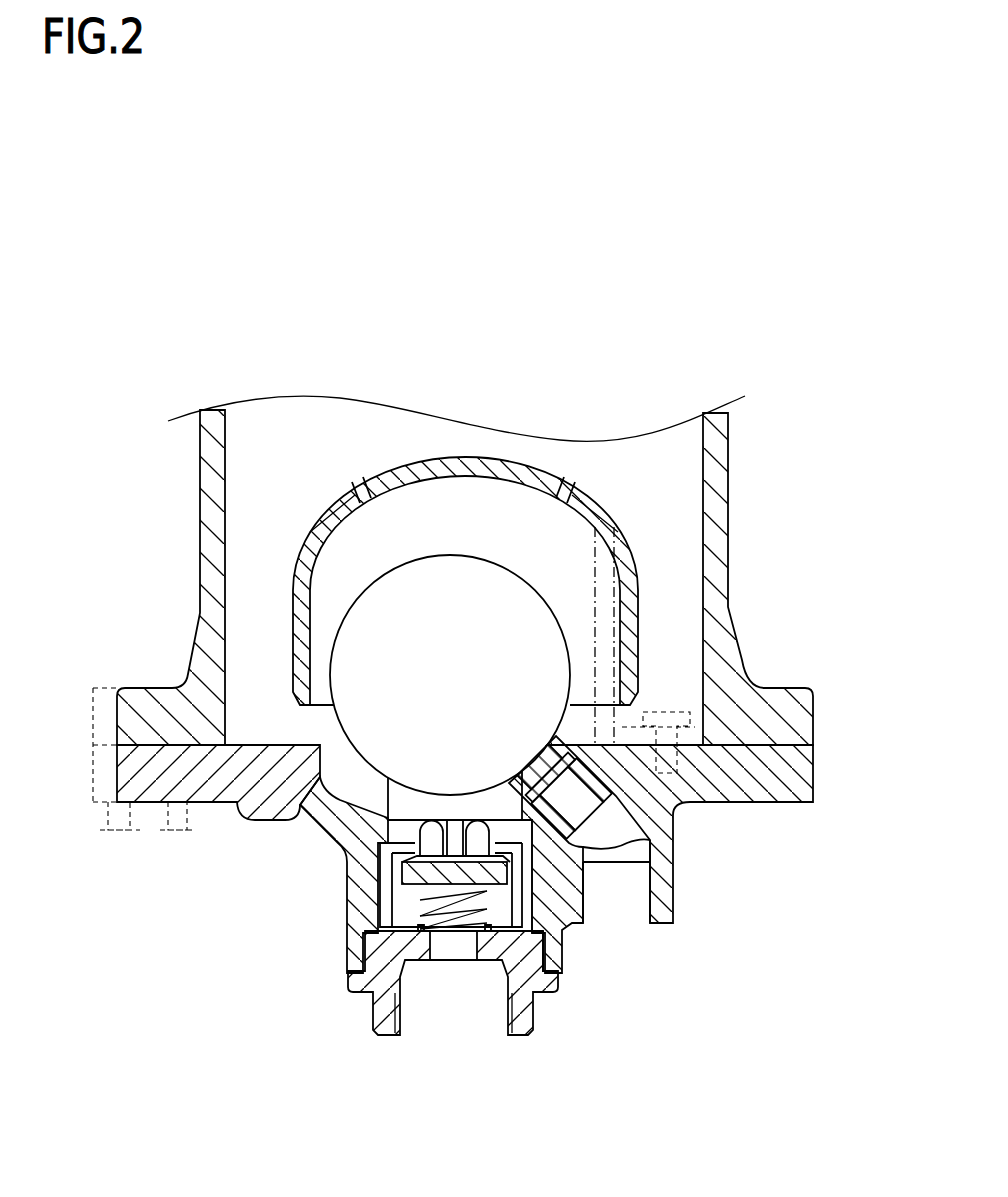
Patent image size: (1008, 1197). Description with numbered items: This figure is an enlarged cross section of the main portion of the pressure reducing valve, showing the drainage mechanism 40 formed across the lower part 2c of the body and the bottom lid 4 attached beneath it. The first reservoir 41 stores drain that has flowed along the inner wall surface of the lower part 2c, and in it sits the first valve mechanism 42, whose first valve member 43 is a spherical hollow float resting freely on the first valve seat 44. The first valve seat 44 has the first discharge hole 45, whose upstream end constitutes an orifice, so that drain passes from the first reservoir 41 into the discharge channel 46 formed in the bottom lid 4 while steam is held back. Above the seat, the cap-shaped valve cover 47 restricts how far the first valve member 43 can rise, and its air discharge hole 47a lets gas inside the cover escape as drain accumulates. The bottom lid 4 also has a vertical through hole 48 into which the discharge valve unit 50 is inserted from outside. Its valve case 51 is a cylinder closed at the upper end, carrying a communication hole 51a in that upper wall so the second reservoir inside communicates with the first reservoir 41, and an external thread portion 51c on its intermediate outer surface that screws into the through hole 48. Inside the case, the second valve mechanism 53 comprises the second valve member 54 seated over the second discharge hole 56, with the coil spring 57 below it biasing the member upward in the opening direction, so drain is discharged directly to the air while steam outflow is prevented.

The lower part 2c is at (728, 480).
The bottom lid 4 is at (100, 765).
The drainage mechanism 40 is at (443, 548).
The first reservoir 41 is at (655, 532).
The first valve mechanism 42 is at (566, 585).
The first valve member 43 is at (452, 553).
The first valve seat 44 is at (553, 737).
The first discharge hole 45 is at (592, 817).
The discharge channel 46 is at (630, 880).
The valve cover 47 is at (320, 503).
The air discharge hole 47a is at (353, 488).
The through hole 48 is at (385, 950).
The discharge valve unit 50 is at (391, 1050).
The valve case 51 is at (530, 930).
The communication hole 51a is at (347, 838).
The external thread portion 51c is at (537, 997).
The second valve mechanism 53 is at (543, 914).
The second valve member 54 is at (507, 919).
The second discharge hole 56 is at (465, 948).
The spring 57 is at (447, 932).